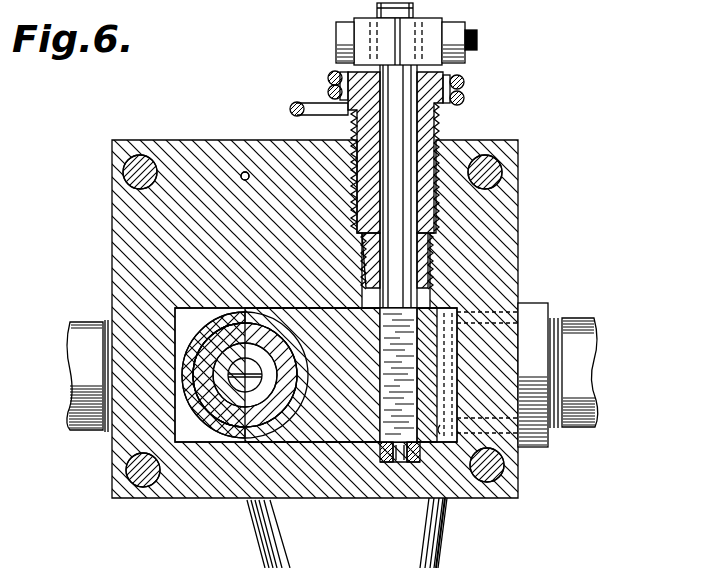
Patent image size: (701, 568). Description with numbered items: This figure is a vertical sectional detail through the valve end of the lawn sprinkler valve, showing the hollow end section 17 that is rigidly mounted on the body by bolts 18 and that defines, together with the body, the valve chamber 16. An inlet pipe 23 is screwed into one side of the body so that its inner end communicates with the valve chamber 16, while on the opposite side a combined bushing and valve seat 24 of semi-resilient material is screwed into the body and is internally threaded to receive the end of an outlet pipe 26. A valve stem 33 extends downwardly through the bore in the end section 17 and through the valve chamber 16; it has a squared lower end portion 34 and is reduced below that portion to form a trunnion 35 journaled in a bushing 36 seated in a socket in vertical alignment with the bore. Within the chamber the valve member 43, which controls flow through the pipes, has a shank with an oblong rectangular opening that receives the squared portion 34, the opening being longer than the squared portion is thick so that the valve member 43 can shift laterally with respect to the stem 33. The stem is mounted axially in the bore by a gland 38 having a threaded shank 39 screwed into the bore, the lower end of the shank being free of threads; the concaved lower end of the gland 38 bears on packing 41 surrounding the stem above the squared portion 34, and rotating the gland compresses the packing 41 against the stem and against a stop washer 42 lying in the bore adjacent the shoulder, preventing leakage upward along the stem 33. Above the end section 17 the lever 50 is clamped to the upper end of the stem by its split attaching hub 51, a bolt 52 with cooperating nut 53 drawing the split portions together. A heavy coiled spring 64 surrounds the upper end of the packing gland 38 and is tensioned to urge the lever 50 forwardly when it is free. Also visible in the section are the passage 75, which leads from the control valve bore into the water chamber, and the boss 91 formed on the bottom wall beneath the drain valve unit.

The valve chamber 16 is at (190, 433).
The hollow end section 17 is at (518, 193).
The bolts 18 is at (497, 470).
The inlet pipe 23 is at (82, 363).
The combined bushing and valve seat 24 is at (533, 328).
The outlet pipe 26 is at (572, 372).
The valve stem 33 is at (403, 140).
The squared lower end portion 34 is at (413, 345).
The trunnion 35 is at (398, 462).
The bushing 36 is at (381, 452).
The gland 38 is at (446, 93).
The threaded shank 39 is at (362, 117).
The packing 41 is at (432, 262).
The stop washer 42 is at (437, 290).
The valve member 43 is at (228, 437).
The lever 50 is at (441, 15).
The attaching hub 51 is at (436, 63).
The bolt 52 is at (474, 42).
The nut 53 is at (445, 58).
The coiled spring 64 is at (297, 103).
The passage 75 is at (247, 172).
The boss 91 is at (448, 545).